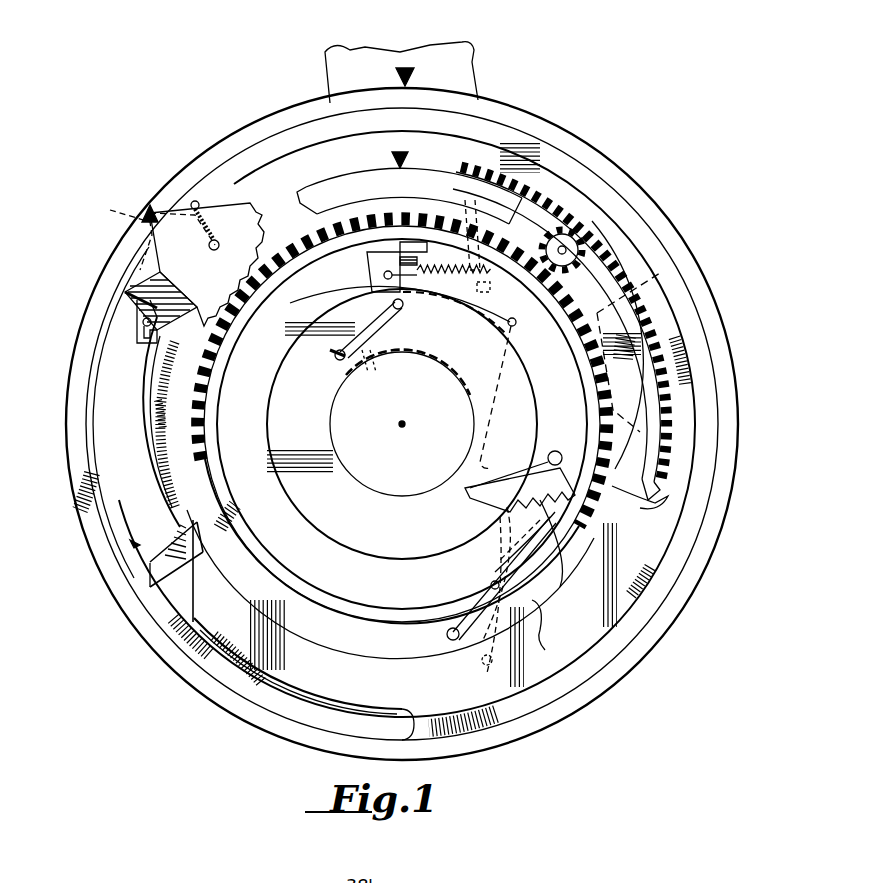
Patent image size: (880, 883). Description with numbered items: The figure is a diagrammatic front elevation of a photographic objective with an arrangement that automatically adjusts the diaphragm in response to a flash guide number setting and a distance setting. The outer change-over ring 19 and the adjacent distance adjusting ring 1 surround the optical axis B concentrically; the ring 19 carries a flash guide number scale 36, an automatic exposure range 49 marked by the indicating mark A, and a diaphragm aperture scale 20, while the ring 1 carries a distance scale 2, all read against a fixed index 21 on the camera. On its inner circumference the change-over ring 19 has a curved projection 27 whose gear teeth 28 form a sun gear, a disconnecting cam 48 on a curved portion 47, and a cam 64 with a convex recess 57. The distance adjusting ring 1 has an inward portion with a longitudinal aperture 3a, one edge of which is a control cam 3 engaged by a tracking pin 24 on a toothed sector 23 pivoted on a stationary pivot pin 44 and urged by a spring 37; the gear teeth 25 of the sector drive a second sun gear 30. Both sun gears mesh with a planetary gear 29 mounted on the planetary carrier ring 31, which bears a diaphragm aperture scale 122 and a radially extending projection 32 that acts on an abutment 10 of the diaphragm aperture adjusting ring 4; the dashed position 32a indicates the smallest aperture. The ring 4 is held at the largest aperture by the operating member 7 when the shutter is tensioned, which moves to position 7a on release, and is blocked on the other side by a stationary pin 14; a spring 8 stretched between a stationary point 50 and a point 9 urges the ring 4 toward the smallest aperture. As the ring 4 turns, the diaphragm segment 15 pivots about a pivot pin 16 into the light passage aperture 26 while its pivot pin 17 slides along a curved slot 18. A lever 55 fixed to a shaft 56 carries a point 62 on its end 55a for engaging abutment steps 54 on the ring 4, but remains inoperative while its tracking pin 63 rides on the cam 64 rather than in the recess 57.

The distance adjusting ring 1 is at (488, 128).
The distance scale 2 is at (240, 158).
The control cam 3 is at (155, 380).
The longitudinal aperture 3a is at (132, 542).
The diaphragm aperture adjusting ring 4 is at (275, 430).
The operating member 7 is at (418, 261).
The released position of operating member 7a is at (400, 310).
The spring 8 is at (492, 292).
The spring attachment point 9 is at (384, 276).
The abutment 10 is at (375, 260).
The stationary pin 14 is at (555, 450).
The diaphragm segment 15 is at (434, 366).
The pivot pin 16 is at (370, 370).
The pivot pin 17 is at (401, 310).
The curved slot 18 is at (338, 352).
The change-over ring 19 is at (470, 100).
The diaphragm aperture scale 20 is at (95, 280).
The fixed index 21 is at (404, 66).
The toothed sector 23 is at (178, 262).
The tracking pin 24 is at (140, 313).
The gear teeth 25 is at (255, 215).
The light passage aperture 26 is at (385, 458).
The projection 27 is at (560, 185).
The gear teeth 28 is at (553, 200).
The planetary gear 29 is at (580, 245).
The second sun gear 30 is at (195, 465).
The planetary carrier ring 31 is at (620, 320).
The radially extending projection 32 is at (418, 247).
The projection position for smallest aperture 32a is at (471, 239).
The flash guide number scale 36 is at (270, 118).
The spring 37 is at (200, 210).
The stationary pivot pin 44 is at (140, 215).
The curved portion 47 is at (262, 683).
The disconnecting cam 48 is at (150, 587).
The automatic exposure range 49 is at (150, 205).
The stationary point 50 is at (516, 324).
The abutment steps 54 is at (575, 495).
The lever 55 is at (472, 648).
The lever end 55a is at (560, 602).
The shaft 56 is at (490, 586).
The convex recess 57 is at (658, 510).
The point 62 is at (507, 512).
The tracking pin 63 is at (448, 638).
The cam 64 is at (546, 627).
The diaphragm aperture scale 122 is at (355, 178).
The optical axis B is at (405, 424).